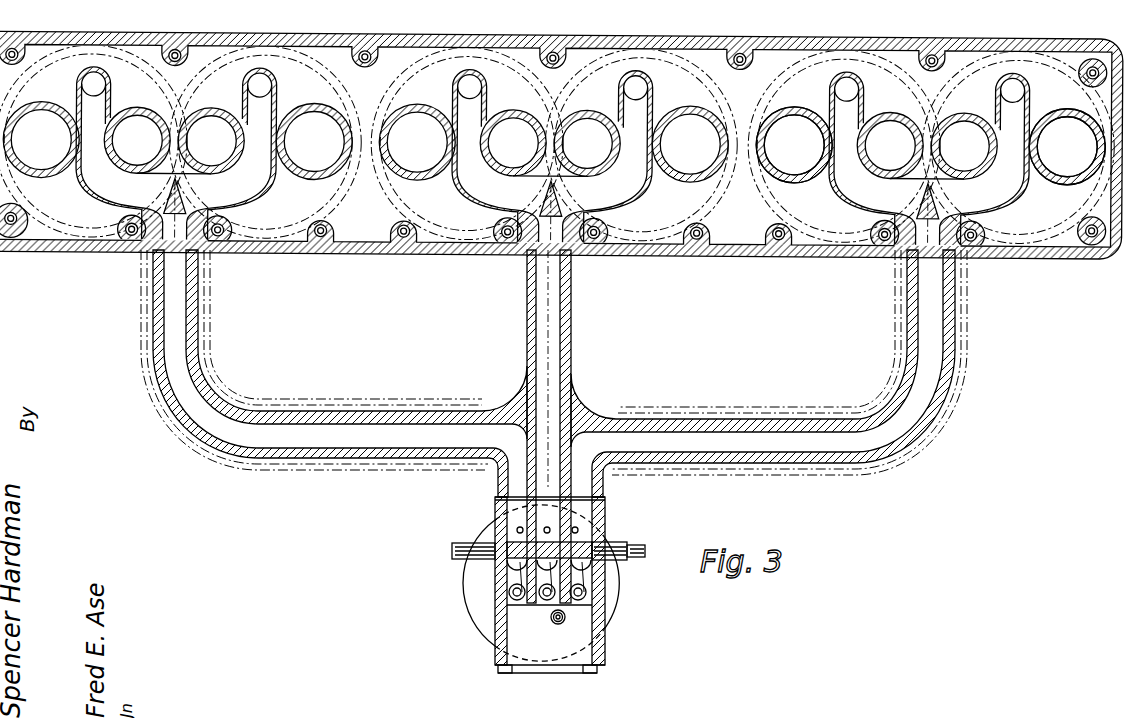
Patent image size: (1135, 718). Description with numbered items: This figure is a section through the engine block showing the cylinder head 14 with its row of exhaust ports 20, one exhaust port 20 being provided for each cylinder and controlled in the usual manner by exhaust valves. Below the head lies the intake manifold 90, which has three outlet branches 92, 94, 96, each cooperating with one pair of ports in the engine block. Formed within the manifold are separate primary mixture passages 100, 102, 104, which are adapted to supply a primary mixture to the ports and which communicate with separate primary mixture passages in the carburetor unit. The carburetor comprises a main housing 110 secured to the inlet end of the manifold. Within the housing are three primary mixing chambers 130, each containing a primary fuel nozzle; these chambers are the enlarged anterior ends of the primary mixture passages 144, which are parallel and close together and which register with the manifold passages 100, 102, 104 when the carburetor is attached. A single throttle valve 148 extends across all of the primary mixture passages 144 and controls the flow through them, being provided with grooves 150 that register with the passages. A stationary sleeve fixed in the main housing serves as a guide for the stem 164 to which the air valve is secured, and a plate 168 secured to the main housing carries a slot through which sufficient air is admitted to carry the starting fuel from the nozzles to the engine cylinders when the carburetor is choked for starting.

The cylinder head 14 is at (1068, 258).
The exhaust port 20 is at (800, 173).
The intake manifold 90 is at (287, 467).
The outlet branch 92 is at (208, 331).
The outlet branch 94 is at (583, 327).
The outlet branch 96 is at (958, 328).
The primary mixture passage 100 is at (186, 293).
The primary mixture passage 102 is at (558, 298).
The primary mixture passage 104 is at (938, 297).
The main housing 110 is at (603, 603).
The primary mixing chamber 130 is at (521, 537).
The primary mixture passage 144 is at (522, 605).
The throttle valve 148 is at (598, 545).
The groove 150 is at (597, 578).
The stem 164 is at (564, 621).
The plate 168 is at (545, 667).